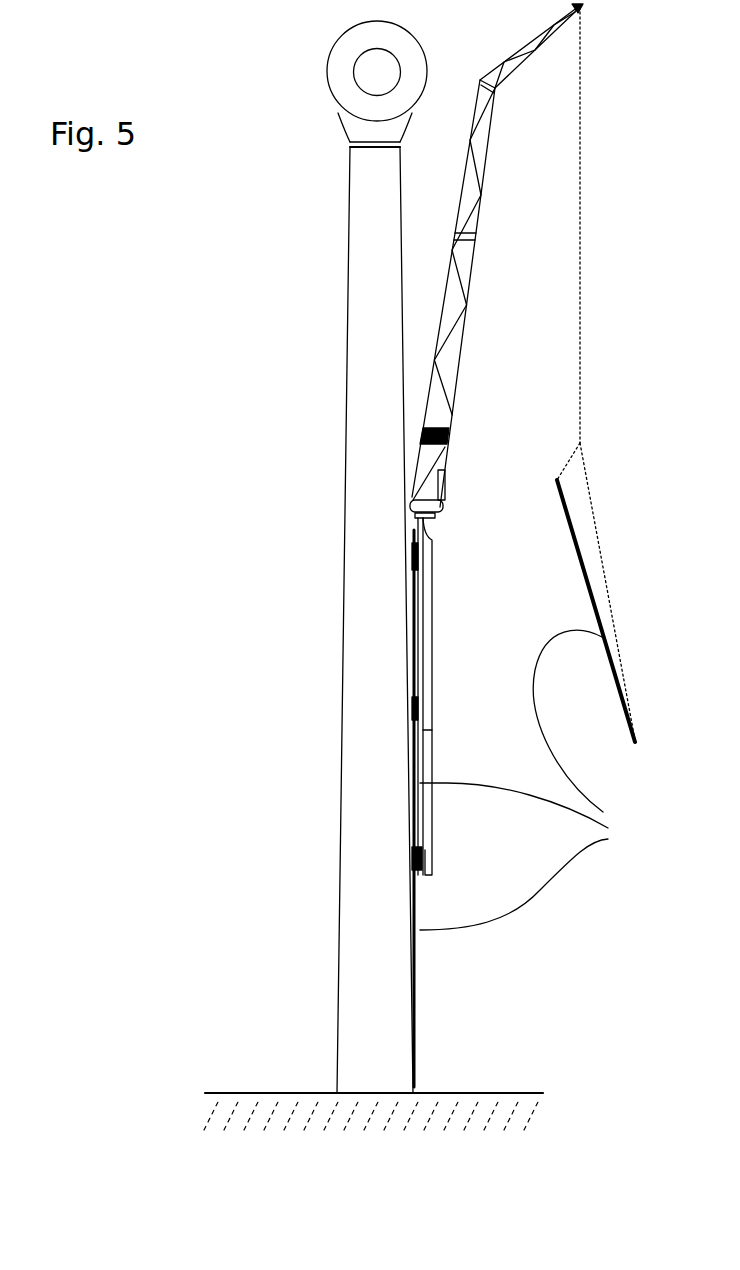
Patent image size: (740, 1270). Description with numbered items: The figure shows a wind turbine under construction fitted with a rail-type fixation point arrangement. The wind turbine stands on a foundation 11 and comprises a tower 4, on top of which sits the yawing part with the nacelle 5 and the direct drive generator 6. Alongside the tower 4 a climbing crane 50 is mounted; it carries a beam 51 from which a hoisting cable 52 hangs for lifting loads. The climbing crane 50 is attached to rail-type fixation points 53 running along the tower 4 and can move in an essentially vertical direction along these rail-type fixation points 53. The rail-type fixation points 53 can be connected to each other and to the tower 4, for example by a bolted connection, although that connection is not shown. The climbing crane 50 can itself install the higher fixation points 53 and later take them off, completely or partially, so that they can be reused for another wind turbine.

The tower 4 is at (362, 356).
The nacelle 5 is at (348, 127).
The direct drive generator 6 is at (336, 70).
The foundation 11 is at (257, 1093).
The climbing crane 50 is at (433, 587).
The beam 51 is at (480, 183).
The hoisting cable 52 is at (582, 345).
The rail-type fixation points 53 is at (532, 780).